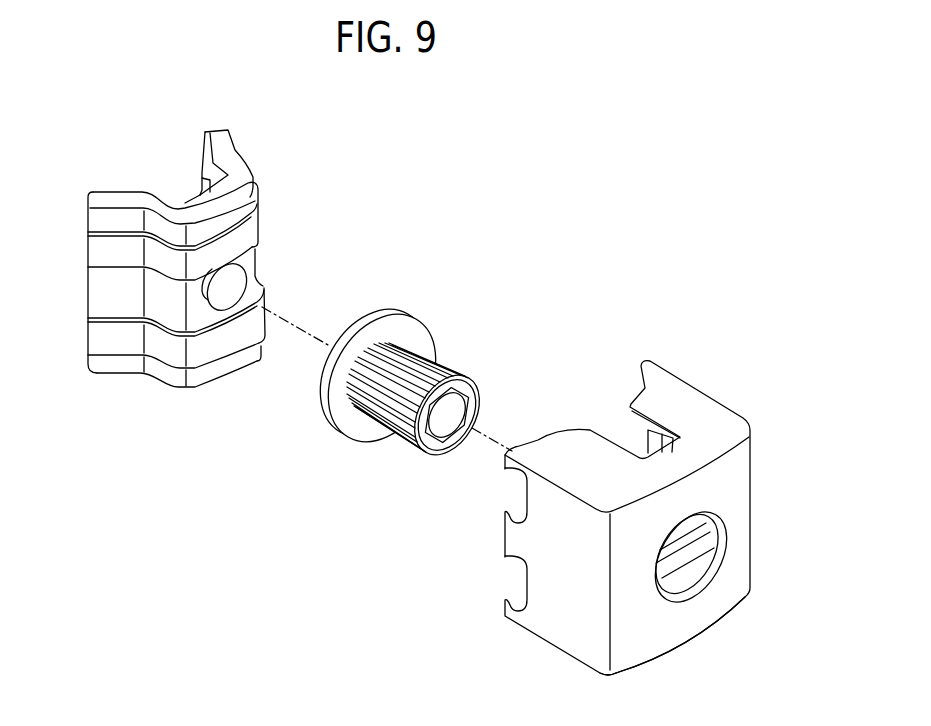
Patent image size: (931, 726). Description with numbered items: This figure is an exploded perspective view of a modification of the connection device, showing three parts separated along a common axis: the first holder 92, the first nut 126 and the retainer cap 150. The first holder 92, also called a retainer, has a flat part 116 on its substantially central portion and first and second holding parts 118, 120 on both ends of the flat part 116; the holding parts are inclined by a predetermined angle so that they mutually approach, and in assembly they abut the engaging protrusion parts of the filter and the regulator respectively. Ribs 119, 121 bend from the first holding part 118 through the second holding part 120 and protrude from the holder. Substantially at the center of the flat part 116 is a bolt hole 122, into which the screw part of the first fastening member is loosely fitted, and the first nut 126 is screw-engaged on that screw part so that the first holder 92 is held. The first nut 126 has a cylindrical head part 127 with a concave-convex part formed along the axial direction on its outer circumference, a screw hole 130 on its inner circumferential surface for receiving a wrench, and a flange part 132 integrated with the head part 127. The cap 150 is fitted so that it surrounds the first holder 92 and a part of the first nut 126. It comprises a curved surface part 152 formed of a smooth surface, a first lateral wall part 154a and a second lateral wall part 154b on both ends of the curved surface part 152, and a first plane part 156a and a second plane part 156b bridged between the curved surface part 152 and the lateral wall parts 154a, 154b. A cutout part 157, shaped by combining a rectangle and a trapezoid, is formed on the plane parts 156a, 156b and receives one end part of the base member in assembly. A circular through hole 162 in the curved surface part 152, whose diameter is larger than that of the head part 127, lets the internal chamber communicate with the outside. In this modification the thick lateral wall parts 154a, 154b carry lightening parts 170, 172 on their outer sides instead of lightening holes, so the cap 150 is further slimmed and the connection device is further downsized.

The first holder 92 is at (187, 256).
The flat part 116 is at (200, 190).
The first holding part 118 is at (94, 379).
The rib 119 is at (243, 202).
The second holding part 120 is at (223, 137).
The rib 121 is at (223, 335).
The bolt hole 122 is at (238, 283).
The first nut 126 is at (412, 379).
The head part 127 is at (432, 360).
The screw hole 130 is at (453, 403).
The flange part 132 is at (327, 420).
The retainer cap 150 is at (633, 543).
The curved surface part 152 is at (700, 622).
The first lateral wall part 154a is at (754, 532).
The second lateral wall part 154b is at (563, 622).
The first plane part 156a is at (707, 430).
The second plane part 156b is at (647, 667).
The cutout part 157 is at (628, 427).
The through hole 162 is at (707, 572).
The lightening part 170 is at (517, 493).
The lightening part 172 is at (517, 583).